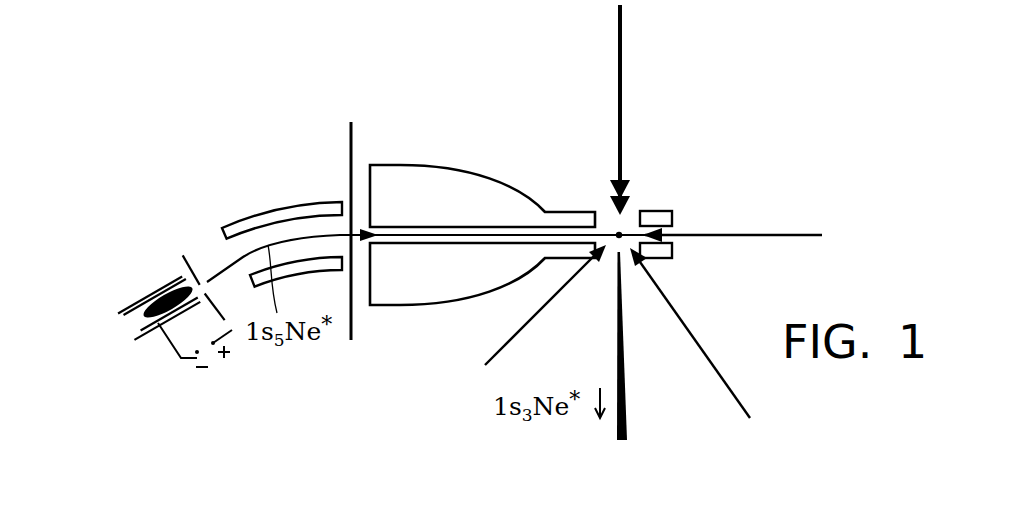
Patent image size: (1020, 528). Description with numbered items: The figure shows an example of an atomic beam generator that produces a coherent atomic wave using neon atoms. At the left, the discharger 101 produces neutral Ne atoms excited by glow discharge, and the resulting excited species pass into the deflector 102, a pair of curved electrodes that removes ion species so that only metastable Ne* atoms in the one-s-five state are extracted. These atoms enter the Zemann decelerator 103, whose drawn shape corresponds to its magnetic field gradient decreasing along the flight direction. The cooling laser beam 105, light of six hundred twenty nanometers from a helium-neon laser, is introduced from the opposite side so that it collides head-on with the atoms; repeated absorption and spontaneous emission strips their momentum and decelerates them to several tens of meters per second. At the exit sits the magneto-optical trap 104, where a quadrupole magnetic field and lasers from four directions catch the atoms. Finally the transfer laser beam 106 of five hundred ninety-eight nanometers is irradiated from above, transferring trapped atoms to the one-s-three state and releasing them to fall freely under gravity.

The discharger 101 is at (144, 286).
The deflector 102 is at (268, 207).
The Zemann decelerator 103 is at (415, 173).
The magneto-optical trap 104 is at (680, 202).
The cooling laser beam 105 is at (775, 233).
The transfer laser beam 106 is at (625, 50).